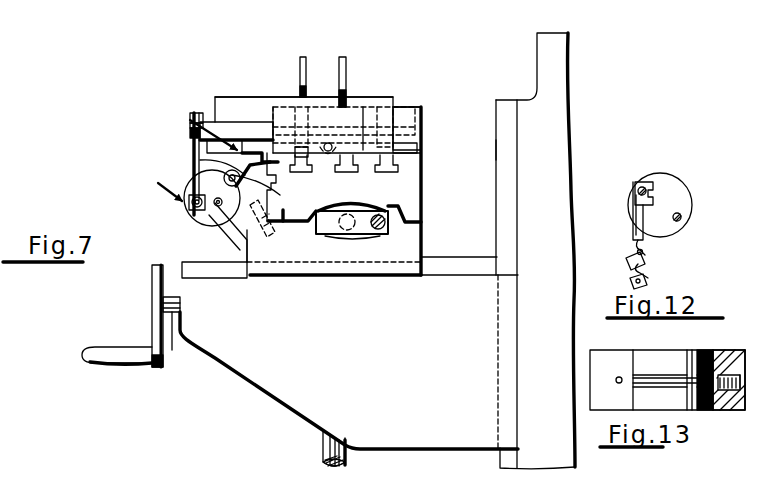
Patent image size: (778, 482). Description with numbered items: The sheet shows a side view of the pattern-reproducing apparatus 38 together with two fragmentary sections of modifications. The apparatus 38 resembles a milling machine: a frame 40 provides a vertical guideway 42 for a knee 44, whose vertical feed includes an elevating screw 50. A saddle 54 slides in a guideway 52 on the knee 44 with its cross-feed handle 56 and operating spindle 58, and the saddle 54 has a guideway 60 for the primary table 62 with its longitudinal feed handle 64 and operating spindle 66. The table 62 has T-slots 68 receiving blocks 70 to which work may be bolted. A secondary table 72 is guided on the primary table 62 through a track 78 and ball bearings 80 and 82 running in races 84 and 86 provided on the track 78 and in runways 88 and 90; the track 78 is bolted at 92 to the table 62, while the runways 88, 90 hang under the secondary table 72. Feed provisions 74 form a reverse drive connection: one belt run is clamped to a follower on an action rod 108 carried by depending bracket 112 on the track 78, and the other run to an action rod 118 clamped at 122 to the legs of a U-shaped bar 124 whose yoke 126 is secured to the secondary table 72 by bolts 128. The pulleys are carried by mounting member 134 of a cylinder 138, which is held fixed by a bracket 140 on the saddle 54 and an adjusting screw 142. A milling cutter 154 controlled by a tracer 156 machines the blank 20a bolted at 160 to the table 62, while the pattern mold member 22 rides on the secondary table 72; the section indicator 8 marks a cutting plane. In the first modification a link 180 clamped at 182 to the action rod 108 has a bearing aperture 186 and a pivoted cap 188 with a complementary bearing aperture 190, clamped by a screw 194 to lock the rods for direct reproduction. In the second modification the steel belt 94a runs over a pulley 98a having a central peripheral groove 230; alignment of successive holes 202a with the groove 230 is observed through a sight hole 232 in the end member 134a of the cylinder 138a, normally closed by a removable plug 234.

In FIG. 7, the section line indicator 8 is at (192, 154).
In FIG. 7, the blank 20a is at (422, 104).
In FIG. 7, the mold member 22 is at (216, 100).
In FIG. 7, the apparatus 38 is at (241, 58).
In FIG. 7, the frame 40 is at (553, 146).
In FIG. 7, the vertical guideway 42 is at (496, 153).
In FIG. 7, the knee 44 is at (287, 365).
In FIG. 7, the elevating screw 50 is at (323, 446).
In FIG. 7, the guideway 52 is at (437, 266).
In FIG. 7, the saddle 54 is at (412, 243).
In FIG. 7, the handle 56 is at (147, 350).
In FIG. 7, the operating spindle 58 is at (178, 355).
In FIG. 7, the guideway 60 is at (283, 222).
In FIG. 7, the table 62 is at (427, 167).
In FIG. 7, the handle 64 is at (380, 232).
In FIG. 7, the operating spindle 66 is at (330, 236).
In FIG. 7, the T-slots 68 is at (318, 170).
In FIG. 7, the blocks 70 is at (303, 173).
In FIG. 7, the secondary table 72 is at (199, 112).
In FIG. 7, the feed provisions 74 is at (192, 163).
In FIG. 7, the track 78 is at (259, 138).
In FIG. 7, the ball bearings 80 is at (332, 146).
In FIG. 7, the ball bearings 82 is at (236, 131).
In FIG. 7, the race 84 is at (314, 158).
In FIG. 7, the race 86 is at (225, 174).
In FIG. 7, the runway 88 is at (405, 147).
In FIG. 7, the runway 90 is at (208, 146).
In FIG. 7, the bolts 92 is at (263, 163).
In FIG. 7, the action rod 108 is at (252, 215).
In FIG. 12, the action rod 108 is at (636, 186).
In FIG. 7, the depending bracket 112 is at (280, 187).
In FIG. 7, the action rod 118 is at (195, 211).
In FIG. 12, the action rod 118 is at (682, 216).
In FIG. 7, the clamp 122 is at (194, 200).
In FIG. 7, the U-shaped bar 124 is at (192, 118).
In FIG. 7, the yoke 126 is at (190, 136).
In FIG. 7, the bolts 128 is at (191, 126).
In FIG. 7, the mounting member 134 is at (219, 207).
In FIG. 7, the cylinder 138 is at (198, 224).
In FIG. 7, the bracket 140 is at (236, 235).
In FIG. 7, the adjusting screw 142 is at (210, 225).
In FIG. 7, the milling cutter 154 is at (346, 82).
In FIG. 7, the tracer 156 is at (300, 81).
In FIG. 7, the bolts 160 is at (311, 103).
In FIG. 12, the link 180 is at (636, 215).
In FIG. 12, the clamp 182 is at (642, 186).
In FIG. 12, the bearing aperture 186 is at (646, 245).
In FIG. 12, the pivoted cap 188 is at (628, 265).
In FIG. 12, the bearing aperture 190 is at (649, 270).
In FIG. 12, the screw 194 is at (631, 283).
In FIG. 13, the steel belt 94a is at (596, 350).
In FIG. 13, the pulley 98a is at (645, 362).
In FIG. 13, the holes 202a is at (712, 350).
In FIG. 13, the peripheral groove 230 is at (652, 381).
In FIG. 13, the sight hole 232 is at (747, 350).
In FIG. 13, the plug 234 is at (731, 392).
In FIG. 13, the end member 134a is at (718, 412).
In FIG. 13, the cylinder 138a is at (748, 348).